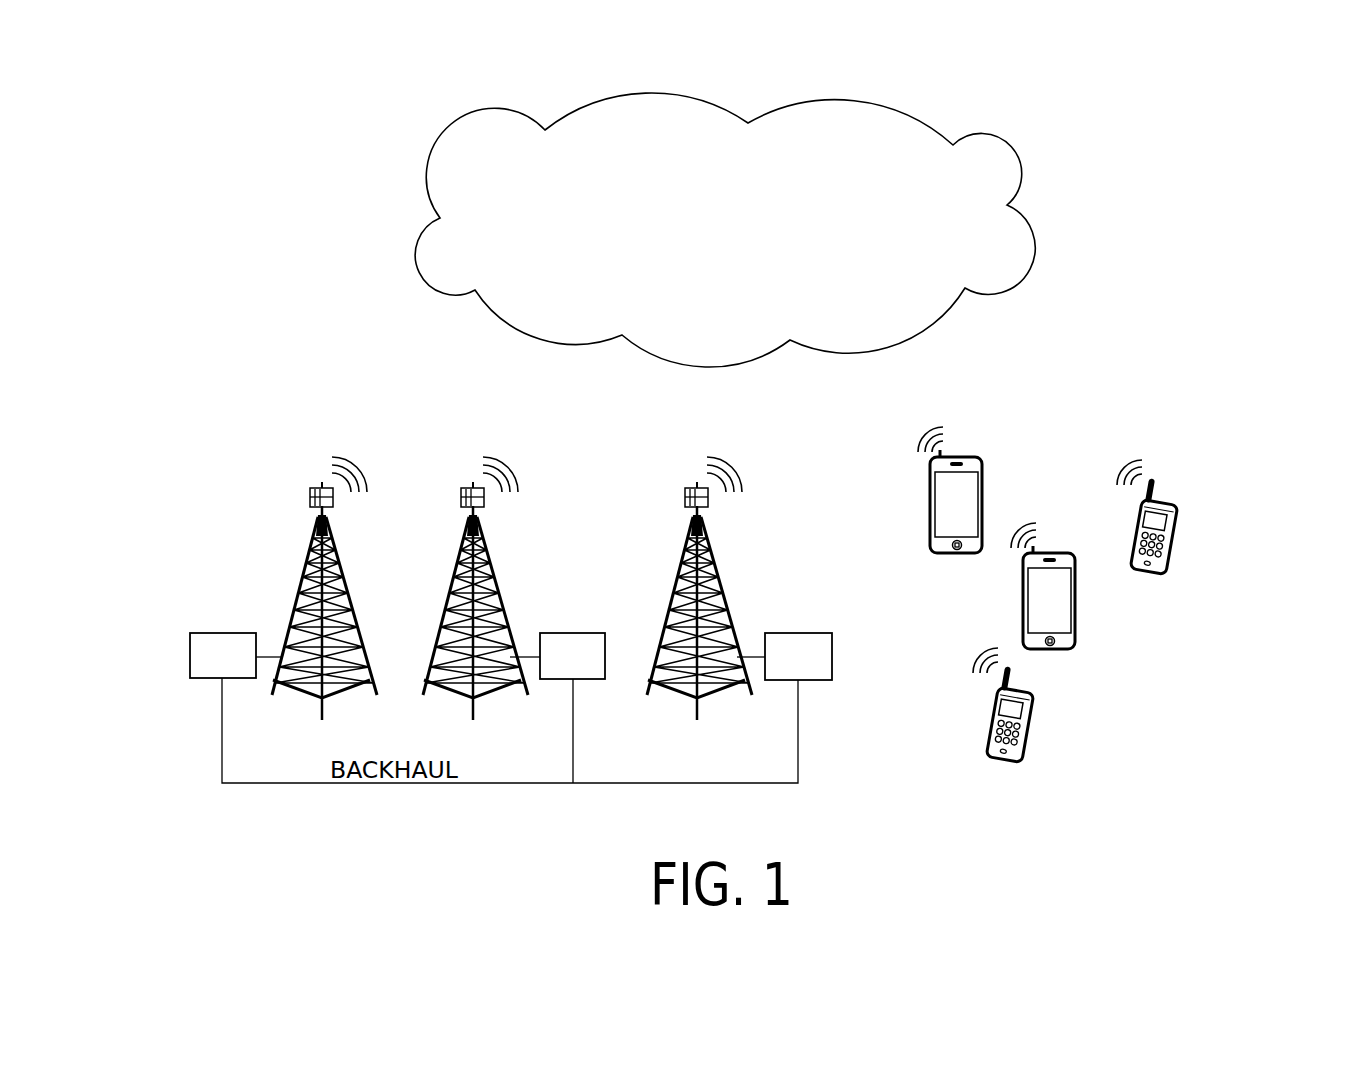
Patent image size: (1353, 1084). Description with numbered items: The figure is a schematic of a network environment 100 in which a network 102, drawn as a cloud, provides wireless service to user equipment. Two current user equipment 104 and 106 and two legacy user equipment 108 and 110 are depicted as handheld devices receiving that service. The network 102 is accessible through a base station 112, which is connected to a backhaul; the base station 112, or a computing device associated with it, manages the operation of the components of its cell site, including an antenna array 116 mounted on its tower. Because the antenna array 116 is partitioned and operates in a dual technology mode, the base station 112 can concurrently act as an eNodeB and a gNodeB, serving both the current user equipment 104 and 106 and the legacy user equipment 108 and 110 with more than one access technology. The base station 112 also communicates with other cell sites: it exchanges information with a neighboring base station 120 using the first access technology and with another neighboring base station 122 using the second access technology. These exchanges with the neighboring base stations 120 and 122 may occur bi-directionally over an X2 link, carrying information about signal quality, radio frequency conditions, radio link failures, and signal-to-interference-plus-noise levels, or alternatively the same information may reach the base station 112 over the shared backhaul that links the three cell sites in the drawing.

The network environment 100 is at (205, 186).
The network 102 is at (725, 230).
The current user equipment 104 is at (983, 498).
The current user equipment 106 is at (1076, 600).
The legacy user equipment 108 is at (1035, 718).
The legacy user equipment 110 is at (1178, 538).
The base station 112 is at (795, 633).
The antenna array 116 is at (709, 500).
The neighboring base station 120 is at (570, 633).
The neighboring base station 122 is at (222, 633).